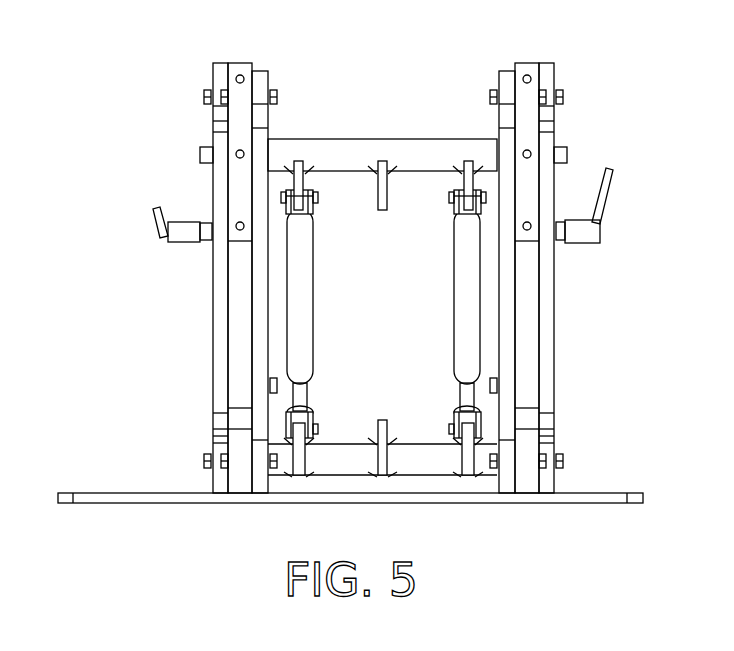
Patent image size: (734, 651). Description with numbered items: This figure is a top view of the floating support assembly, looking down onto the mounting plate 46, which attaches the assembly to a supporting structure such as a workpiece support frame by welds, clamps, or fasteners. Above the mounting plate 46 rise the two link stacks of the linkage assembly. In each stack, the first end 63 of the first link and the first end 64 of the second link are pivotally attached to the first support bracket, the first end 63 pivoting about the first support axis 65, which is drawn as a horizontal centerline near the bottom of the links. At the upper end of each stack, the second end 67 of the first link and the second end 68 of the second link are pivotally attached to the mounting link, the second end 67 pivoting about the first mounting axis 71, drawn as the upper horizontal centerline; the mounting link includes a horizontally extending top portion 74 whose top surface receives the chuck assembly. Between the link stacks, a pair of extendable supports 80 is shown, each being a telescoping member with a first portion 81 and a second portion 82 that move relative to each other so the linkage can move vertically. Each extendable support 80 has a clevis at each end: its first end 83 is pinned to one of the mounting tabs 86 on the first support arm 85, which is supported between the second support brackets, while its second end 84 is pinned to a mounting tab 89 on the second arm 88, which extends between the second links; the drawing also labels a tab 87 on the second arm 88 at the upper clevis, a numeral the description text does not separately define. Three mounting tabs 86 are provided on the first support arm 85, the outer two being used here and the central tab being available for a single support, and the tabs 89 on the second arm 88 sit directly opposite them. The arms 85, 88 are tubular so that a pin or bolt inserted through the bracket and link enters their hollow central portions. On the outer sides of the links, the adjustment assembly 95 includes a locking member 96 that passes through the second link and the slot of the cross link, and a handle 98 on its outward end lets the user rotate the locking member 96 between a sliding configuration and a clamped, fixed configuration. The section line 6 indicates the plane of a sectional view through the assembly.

The section line 6- 6 is at (282, 543).
The mounting plate 46 is at (594, 499).
The first end of first link 63 is at (263, 478).
The first end of second link 64 is at (218, 478).
The first support axis 65 is at (176, 461).
The second end of first link 67 is at (262, 72).
The second end of second link 68 is at (222, 66).
The first mounting axis 71 is at (176, 95).
The top portion 74 is at (236, 126).
The extendable support 80 is at (383, 319).
The first portion 81 is at (383, 414).
The second portion 82 is at (303, 337).
The first end of extendable support 83 is at (310, 421).
The second end of extendable support 84 is at (315, 201).
The first support arm 85 is at (414, 478).
The mounting tabs 86 is at (302, 441).
The upper mounting tab 87 is at (297, 178).
The second arm 88 is at (412, 150).
The mounting tabs 89 is at (466, 178).
The adjustment assembly 95 is at (425, 234).
The locking member 96 is at (560, 236).
The handle 98 is at (608, 230).